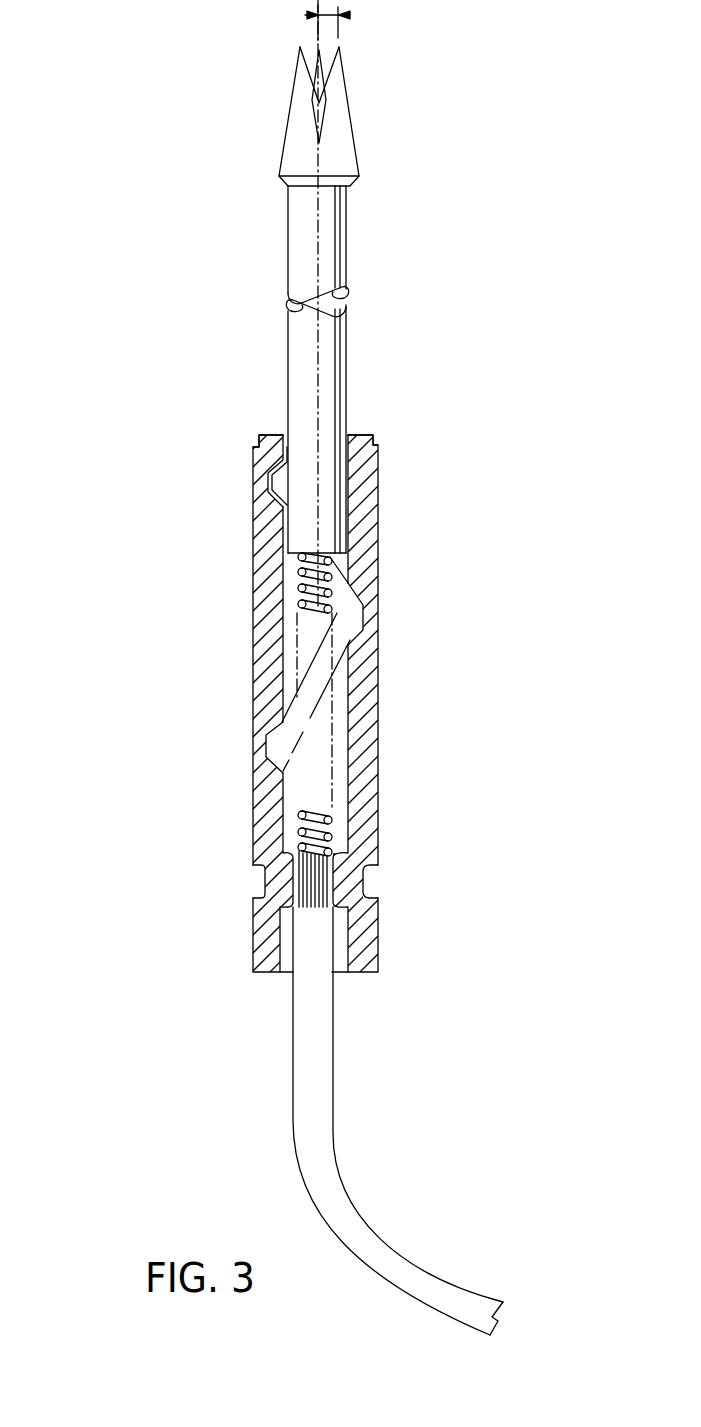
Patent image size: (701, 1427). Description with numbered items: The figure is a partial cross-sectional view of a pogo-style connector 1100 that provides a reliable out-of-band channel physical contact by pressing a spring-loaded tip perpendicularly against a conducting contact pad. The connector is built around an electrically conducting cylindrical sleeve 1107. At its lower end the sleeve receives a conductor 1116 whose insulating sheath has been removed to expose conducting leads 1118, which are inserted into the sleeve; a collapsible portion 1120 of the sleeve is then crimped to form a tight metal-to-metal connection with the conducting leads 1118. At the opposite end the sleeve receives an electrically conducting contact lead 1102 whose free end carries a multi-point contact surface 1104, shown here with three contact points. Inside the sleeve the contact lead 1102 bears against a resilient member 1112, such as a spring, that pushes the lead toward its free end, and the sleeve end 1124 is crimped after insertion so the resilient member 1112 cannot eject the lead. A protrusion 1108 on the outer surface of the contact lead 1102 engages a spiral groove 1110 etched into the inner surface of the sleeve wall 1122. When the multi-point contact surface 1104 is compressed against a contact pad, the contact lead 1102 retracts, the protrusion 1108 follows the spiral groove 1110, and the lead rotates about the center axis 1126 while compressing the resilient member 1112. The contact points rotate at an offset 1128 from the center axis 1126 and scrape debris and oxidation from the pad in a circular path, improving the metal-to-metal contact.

The pogo-style connector 1100 is at (117, 136).
The contact lead 1102 is at (327, 239).
The multi-point contact surface 1104 is at (345, 148).
The cylindrical sleeve 1107 is at (380, 530).
The protrusion 1108 is at (269, 482).
The spiral groove 1110 is at (350, 622).
The resilient member 1112 is at (330, 574).
The conductor 1116 is at (333, 1059).
The conducting leads 1118 is at (325, 875).
The collapsible portion 1120 is at (265, 883).
The barrel wall 1122 is at (275, 618).
The end of cylindrical sleeve 1124 is at (258, 440).
The center axis 1126 is at (316, 216).
The offset 1128 is at (345, 1).